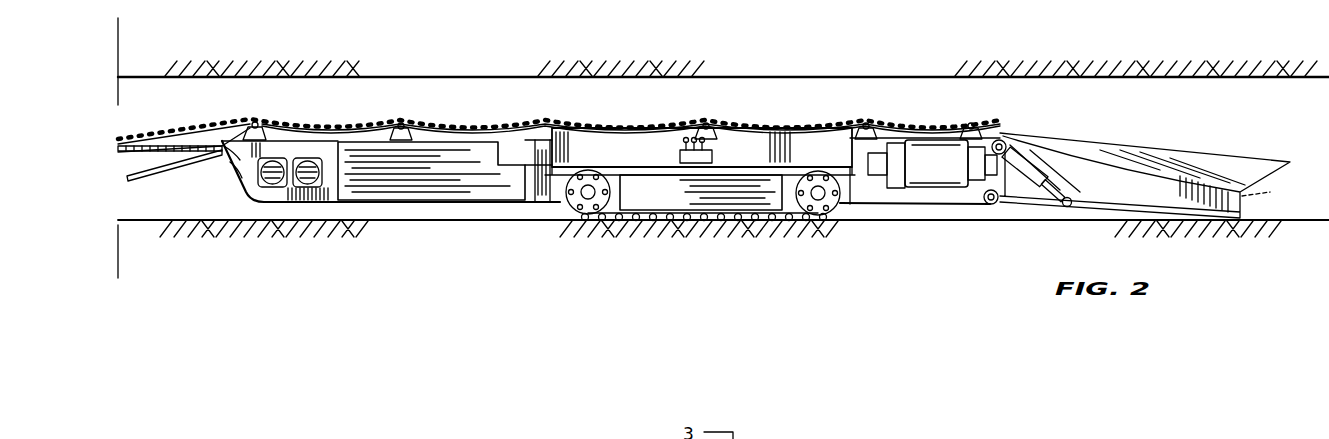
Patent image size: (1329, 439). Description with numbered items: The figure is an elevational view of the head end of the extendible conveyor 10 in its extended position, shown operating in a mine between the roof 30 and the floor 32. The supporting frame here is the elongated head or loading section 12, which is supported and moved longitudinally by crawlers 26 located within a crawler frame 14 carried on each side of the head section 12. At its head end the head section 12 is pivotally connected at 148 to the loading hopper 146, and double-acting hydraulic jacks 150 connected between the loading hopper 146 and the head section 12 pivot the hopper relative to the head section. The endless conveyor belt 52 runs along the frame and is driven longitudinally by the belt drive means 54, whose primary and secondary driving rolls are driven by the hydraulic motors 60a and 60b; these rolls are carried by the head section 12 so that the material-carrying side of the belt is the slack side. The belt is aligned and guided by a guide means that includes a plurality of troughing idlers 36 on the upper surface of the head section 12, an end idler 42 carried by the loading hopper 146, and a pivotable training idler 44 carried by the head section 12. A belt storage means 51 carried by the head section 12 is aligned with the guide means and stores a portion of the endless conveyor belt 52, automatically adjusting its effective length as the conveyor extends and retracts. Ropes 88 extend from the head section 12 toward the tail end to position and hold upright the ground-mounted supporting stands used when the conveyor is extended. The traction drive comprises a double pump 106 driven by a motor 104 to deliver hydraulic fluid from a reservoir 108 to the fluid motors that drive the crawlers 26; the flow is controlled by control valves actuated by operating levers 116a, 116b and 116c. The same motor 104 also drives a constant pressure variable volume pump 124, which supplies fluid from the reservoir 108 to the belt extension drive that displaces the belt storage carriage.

The extendible conveyor 10 is at (797, 100).
The head section 12 is at (510, 138).
The crawler frame 14 is at (548, 172).
The crawlers 26 is at (583, 219).
The roof 30 is at (908, 80).
The floor 32 is at (1283, 213).
The troughing idlers 36 is at (256, 128).
The end idler 42 is at (1269, 190).
The pivotable training idler 44 is at (234, 180).
The belt storage means 51 is at (600, 132).
The endless conveyor belt 52 is at (468, 128).
The belt drive means 54 is at (297, 201).
The hydraulic motor 60a is at (270, 188).
The hydraulic motor 60b is at (310, 188).
The ropes 88 is at (160, 145).
The motor 104 is at (948, 182).
The double pump 106 is at (882, 175).
The reservoir 108 is at (452, 185).
The operating lever 116a is at (680, 156).
The operating lever 116b is at (688, 175).
The operating lever 116c is at (708, 144).
The constant pressure variable volume pump 124 is at (992, 140).
The loading hopper 146 is at (1225, 165).
The pivotal connection 148 is at (1003, 205).
The double-acting hydraulic jacks 150 is at (1040, 145).